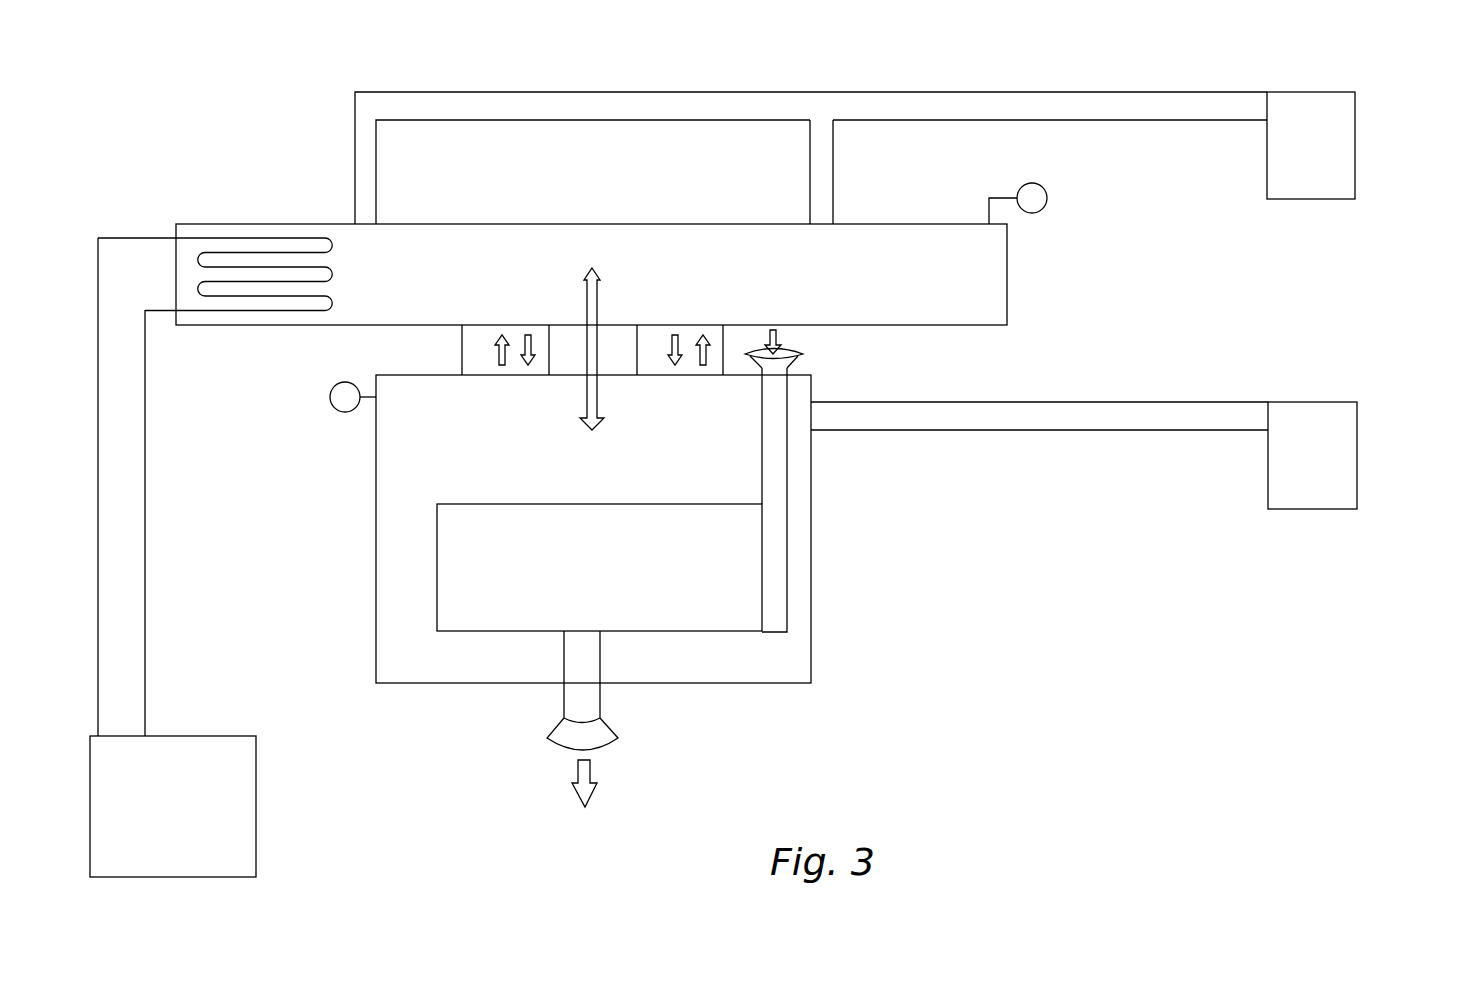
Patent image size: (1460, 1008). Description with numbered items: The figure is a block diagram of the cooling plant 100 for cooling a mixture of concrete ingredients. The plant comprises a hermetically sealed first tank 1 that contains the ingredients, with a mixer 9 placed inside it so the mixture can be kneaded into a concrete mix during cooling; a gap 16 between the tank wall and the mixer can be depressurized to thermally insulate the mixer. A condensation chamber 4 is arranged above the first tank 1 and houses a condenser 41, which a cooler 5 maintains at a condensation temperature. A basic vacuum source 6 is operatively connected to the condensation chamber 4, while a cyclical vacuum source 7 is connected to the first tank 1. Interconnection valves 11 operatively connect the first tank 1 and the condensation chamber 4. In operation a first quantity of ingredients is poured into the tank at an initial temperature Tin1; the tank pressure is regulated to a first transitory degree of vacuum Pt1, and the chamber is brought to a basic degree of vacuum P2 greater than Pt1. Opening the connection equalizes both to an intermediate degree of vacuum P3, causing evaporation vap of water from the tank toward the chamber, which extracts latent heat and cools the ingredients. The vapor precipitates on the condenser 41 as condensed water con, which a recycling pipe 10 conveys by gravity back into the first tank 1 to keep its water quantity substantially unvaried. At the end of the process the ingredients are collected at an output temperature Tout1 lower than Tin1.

The cooling plant 100 is at (242, 120).
The first tank 1 is at (818, 648).
The condensation chamber 4 is at (1020, 287).
The condenser 41 is at (250, 310).
The cooler 5 is at (218, 799).
The basic vacuum source 6 is at (1362, 151).
The cyclical vacuum source 7 is at (1364, 461).
The mixer 9 is at (614, 572).
The recycling pipe 10 is at (631, 341).
The interconnection valves 11 is at (462, 358).
The gap 16 is at (800, 516).
The basic degree of vacuum P2 is at (1032, 198).
The first transitory degree of vacuum Pt1 is at (345, 399).
The intermediate degree of vacuum P3 is at (592, 352).
The initial temperature Tin1 is at (780, 332).
The output temperature Tout1 is at (577, 782).
The condensed water con is at (523, 334).
The evaporation vap is at (497, 337).